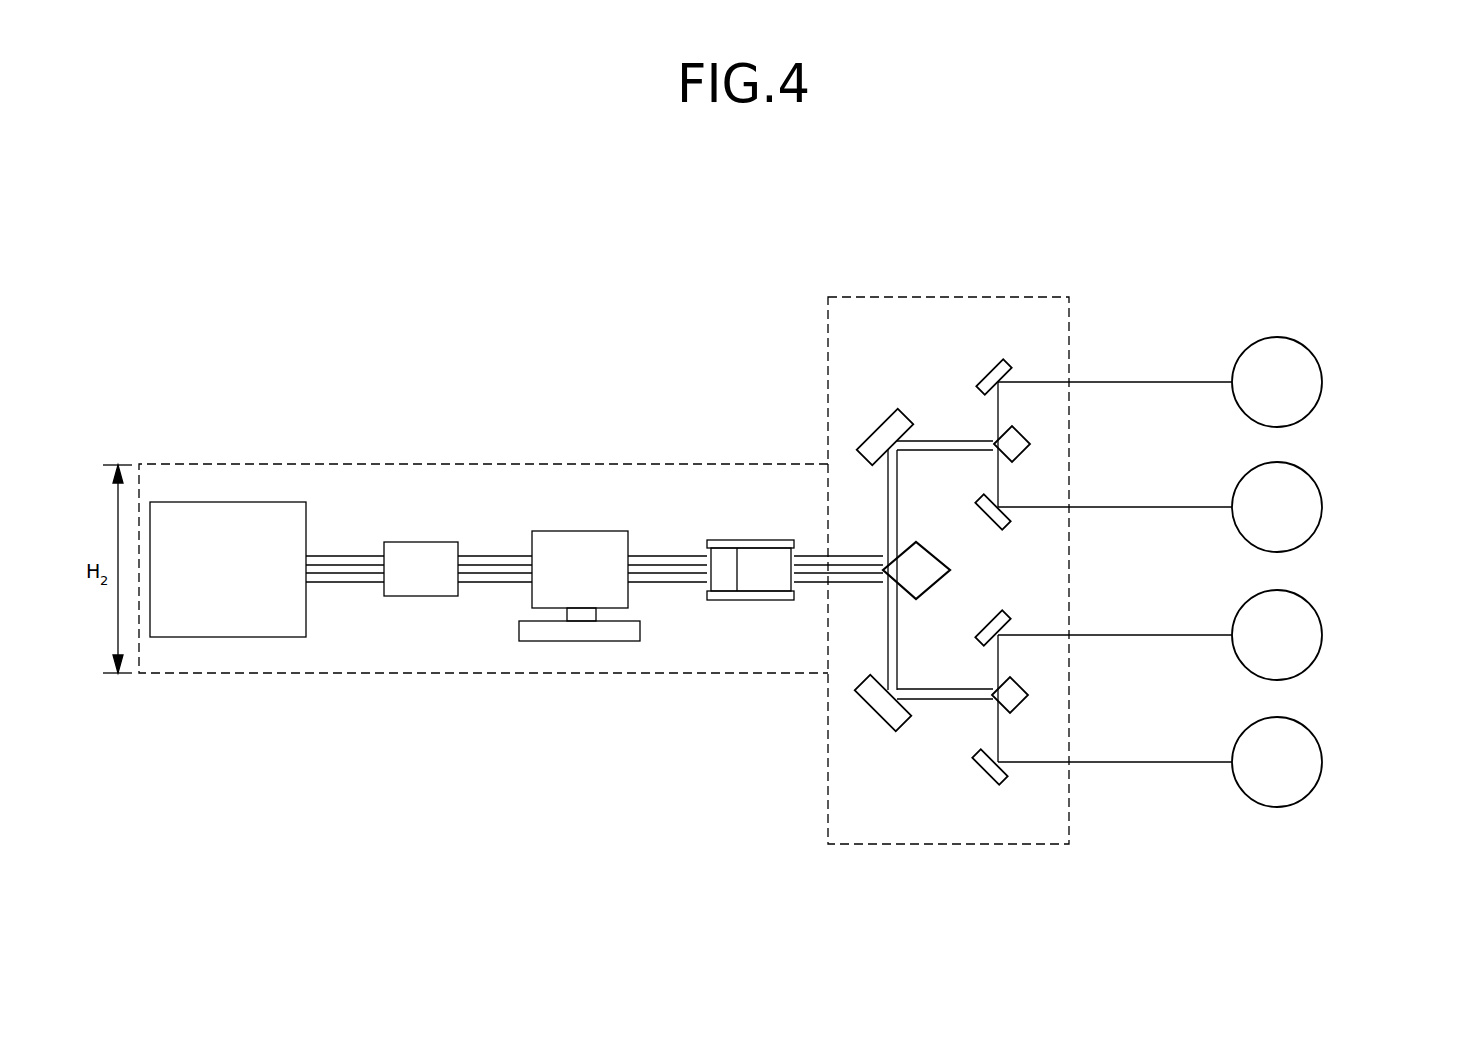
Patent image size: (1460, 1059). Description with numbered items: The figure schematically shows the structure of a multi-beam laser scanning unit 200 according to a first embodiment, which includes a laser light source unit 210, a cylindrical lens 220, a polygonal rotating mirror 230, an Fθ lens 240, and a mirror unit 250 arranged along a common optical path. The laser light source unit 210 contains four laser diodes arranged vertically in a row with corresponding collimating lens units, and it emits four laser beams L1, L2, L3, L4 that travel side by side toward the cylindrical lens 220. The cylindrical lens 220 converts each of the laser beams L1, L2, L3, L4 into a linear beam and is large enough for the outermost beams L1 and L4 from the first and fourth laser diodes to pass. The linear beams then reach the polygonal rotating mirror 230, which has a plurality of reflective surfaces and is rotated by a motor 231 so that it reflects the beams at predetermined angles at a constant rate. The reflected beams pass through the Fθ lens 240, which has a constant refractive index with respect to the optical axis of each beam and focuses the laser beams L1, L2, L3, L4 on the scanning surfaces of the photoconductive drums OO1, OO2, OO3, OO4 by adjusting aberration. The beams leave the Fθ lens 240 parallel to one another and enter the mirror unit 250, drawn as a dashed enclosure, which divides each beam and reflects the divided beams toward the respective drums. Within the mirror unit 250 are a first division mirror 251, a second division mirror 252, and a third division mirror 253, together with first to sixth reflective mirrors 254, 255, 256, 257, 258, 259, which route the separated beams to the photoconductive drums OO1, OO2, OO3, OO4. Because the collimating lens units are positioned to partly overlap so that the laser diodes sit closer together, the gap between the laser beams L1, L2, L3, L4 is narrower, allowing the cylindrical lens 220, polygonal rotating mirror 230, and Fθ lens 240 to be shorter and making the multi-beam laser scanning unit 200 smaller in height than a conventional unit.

The multi-beam laser scanning unit 200 is at (473, 233).
The laser light source unit 210 is at (228, 502).
The cylindrical lens 220 is at (422, 542).
The polygonal rotating mirror 230 is at (579, 531).
The motor 231 is at (580, 641).
The Fθ lens 240 is at (748, 540).
The mirror unit 250 is at (940, 353).
The first division mirror 251 is at (902, 577).
The second division mirror 252 is at (1030, 444).
The third division mirror 253 is at (1028, 695).
The first reflective mirror 254 is at (873, 425).
The second reflective mirror 255 is at (877, 716).
The third reflective mirror 256 is at (1002, 362).
The fourth reflective mirror 257 is at (1007, 520).
The fifth reflective mirror 258 is at (1000, 613).
The sixth reflective mirror 259 is at (1007, 776).
The laser beam L1 is at (323, 556).
The laser beam L2 is at (346, 565).
The laser beam L3 is at (332, 583).
The laser beam L4 is at (353, 583).
The photoconductive drum OO1 is at (1322, 382).
The photoconductive drum OO2 is at (1322, 507).
The photoconductive drum OO3 is at (1322, 635).
The photoconductive drum OO4 is at (1322, 762).